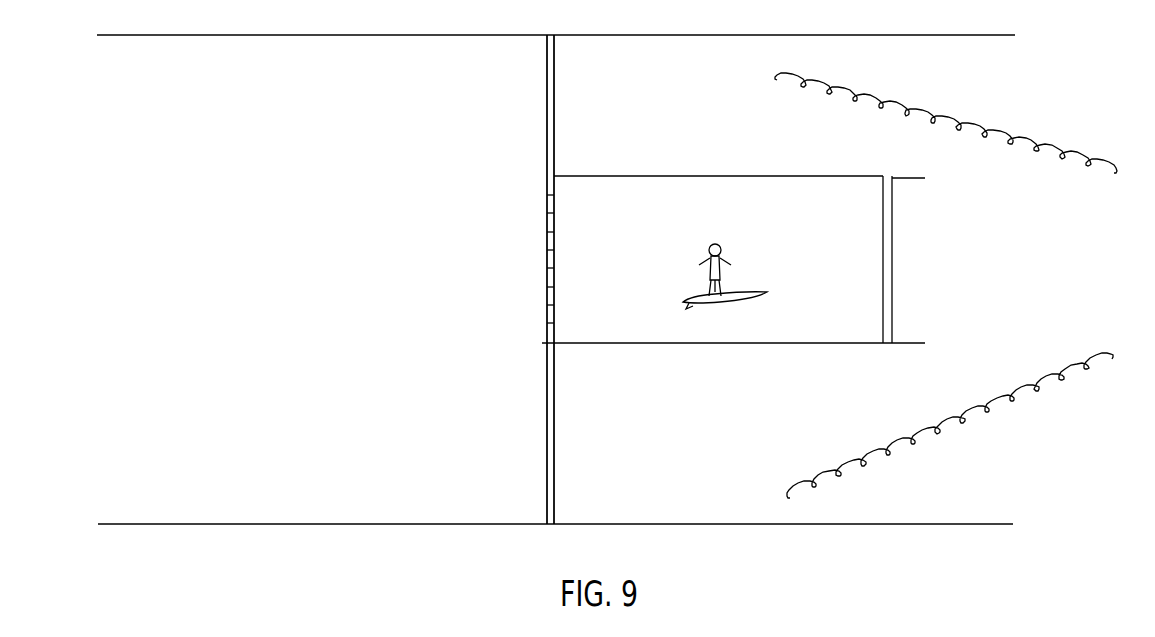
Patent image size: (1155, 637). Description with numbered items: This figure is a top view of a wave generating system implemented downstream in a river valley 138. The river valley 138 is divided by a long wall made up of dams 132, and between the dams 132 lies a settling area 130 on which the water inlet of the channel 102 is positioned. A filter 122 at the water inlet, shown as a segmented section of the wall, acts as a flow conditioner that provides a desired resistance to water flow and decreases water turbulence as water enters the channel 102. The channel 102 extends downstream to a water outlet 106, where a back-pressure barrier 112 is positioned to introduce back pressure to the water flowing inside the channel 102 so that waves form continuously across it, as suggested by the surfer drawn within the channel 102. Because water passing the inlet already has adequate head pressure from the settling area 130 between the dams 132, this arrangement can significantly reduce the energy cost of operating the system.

The channel 102 is at (747, 183).
The water outlet 106 is at (895, 333).
The back-pressure barrier 112 is at (895, 213).
The filter 122 is at (558, 282).
The settling area 130 is at (516, 291).
The dam 132 is at (552, 102).
The river valley 138 is at (215, 520).